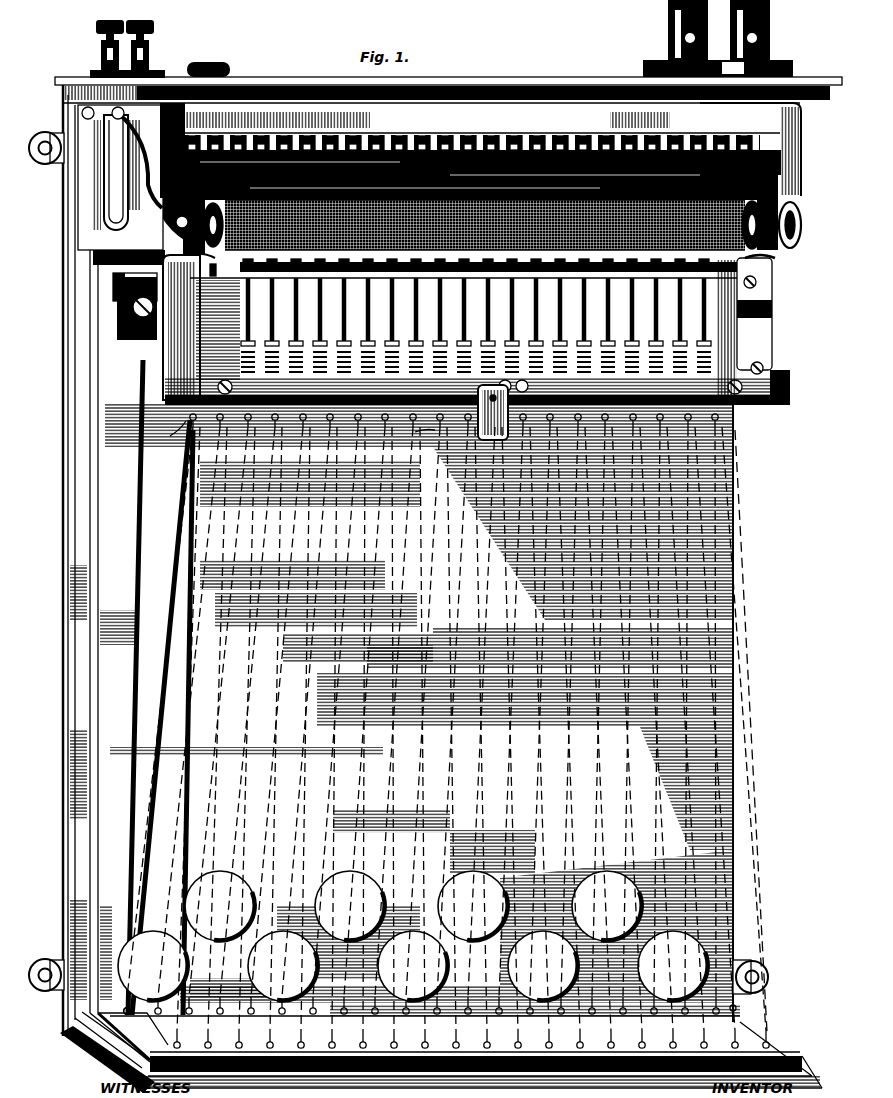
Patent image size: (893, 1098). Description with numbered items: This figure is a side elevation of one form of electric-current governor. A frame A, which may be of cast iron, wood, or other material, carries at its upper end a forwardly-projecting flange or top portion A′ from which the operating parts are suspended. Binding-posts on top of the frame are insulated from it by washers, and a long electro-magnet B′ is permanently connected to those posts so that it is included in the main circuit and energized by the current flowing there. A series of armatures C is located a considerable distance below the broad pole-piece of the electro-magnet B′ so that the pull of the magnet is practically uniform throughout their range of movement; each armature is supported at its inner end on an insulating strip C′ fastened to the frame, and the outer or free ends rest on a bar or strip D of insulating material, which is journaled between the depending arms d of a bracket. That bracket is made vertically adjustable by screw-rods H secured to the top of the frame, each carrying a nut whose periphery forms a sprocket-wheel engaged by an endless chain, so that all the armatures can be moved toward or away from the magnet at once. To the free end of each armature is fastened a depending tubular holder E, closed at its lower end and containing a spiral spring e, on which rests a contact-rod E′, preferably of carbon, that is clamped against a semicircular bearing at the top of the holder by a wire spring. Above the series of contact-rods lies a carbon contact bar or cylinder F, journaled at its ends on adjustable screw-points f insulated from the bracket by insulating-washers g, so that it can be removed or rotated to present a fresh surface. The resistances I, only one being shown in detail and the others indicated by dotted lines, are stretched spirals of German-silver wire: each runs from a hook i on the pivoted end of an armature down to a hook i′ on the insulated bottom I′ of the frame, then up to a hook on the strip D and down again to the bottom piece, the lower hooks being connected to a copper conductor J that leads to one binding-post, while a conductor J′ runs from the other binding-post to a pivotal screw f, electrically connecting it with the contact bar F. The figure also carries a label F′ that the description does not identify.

The frame A is at (64, 627).
The top portion or forwardly-projecting flange A′ is at (448, 78).
The screw-rods H is at (245, 82).
The electro-magnet B′ is at (690, 142).
The main contact bar or cylinder F is at (463, 271).
The bar or strip D is at (790, 332).
The adjustable screw-points f is at (801, 222).
The conductor J′ is at (130, 172).
The copper wire or conductor J is at (88, 386).
The hook i is at (125, 285).
The hook i′ is at (744, 1008).
The armatures C is at (755, 290).
The strip C′ is at (130, 340).
The insulating-washers g is at (203, 265).
The tubular holder E is at (243, 310).
The contact-piece or rod E′ is at (757, 282).
The spiral spring e is at (325, 1034).
The depending arms d is at (760, 260).
The screw F′ is at (764, 366).
The resistances I is at (187, 628).
The insulated bottom I′ is at (131, 1036).